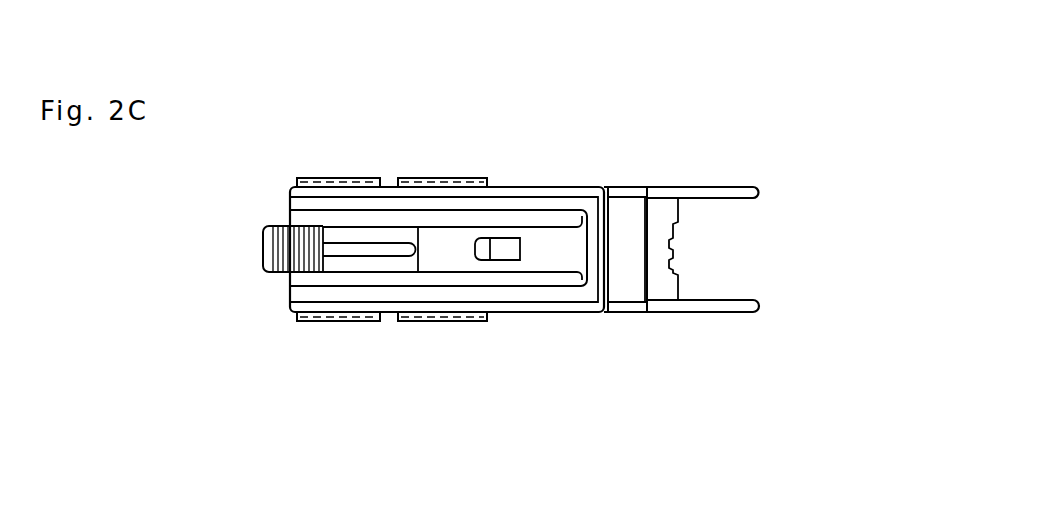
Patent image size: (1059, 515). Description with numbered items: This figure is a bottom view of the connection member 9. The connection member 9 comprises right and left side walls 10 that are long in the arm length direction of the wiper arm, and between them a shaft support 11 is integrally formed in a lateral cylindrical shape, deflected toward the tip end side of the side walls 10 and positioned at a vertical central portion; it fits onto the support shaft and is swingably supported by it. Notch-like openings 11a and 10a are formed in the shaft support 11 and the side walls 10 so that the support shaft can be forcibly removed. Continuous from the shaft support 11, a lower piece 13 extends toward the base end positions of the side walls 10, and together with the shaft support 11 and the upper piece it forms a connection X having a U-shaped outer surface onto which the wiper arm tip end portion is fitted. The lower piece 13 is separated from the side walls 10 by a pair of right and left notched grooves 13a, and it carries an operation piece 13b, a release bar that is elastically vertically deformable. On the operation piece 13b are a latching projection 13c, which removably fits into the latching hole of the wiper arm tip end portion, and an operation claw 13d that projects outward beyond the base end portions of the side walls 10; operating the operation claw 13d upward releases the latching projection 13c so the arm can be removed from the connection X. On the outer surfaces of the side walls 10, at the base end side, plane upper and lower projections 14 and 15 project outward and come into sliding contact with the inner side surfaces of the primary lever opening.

The connection member 9 is at (775, 88).
The right and left side walls 10 is at (688, 187).
The opening 10a is at (605, 237).
The shaft support 11 is at (627, 275).
The opening 11a is at (645, 218).
The lower piece 13 is at (522, 236).
The notched grooves 13a is at (515, 278).
The operation piece 13b is at (372, 262).
The latching projection 13c is at (501, 238).
The operation claw 13d is at (270, 248).
The upper projections 14 is at (320, 175).
The lower projections 15 is at (352, 178).
The connection X is at (423, 290).